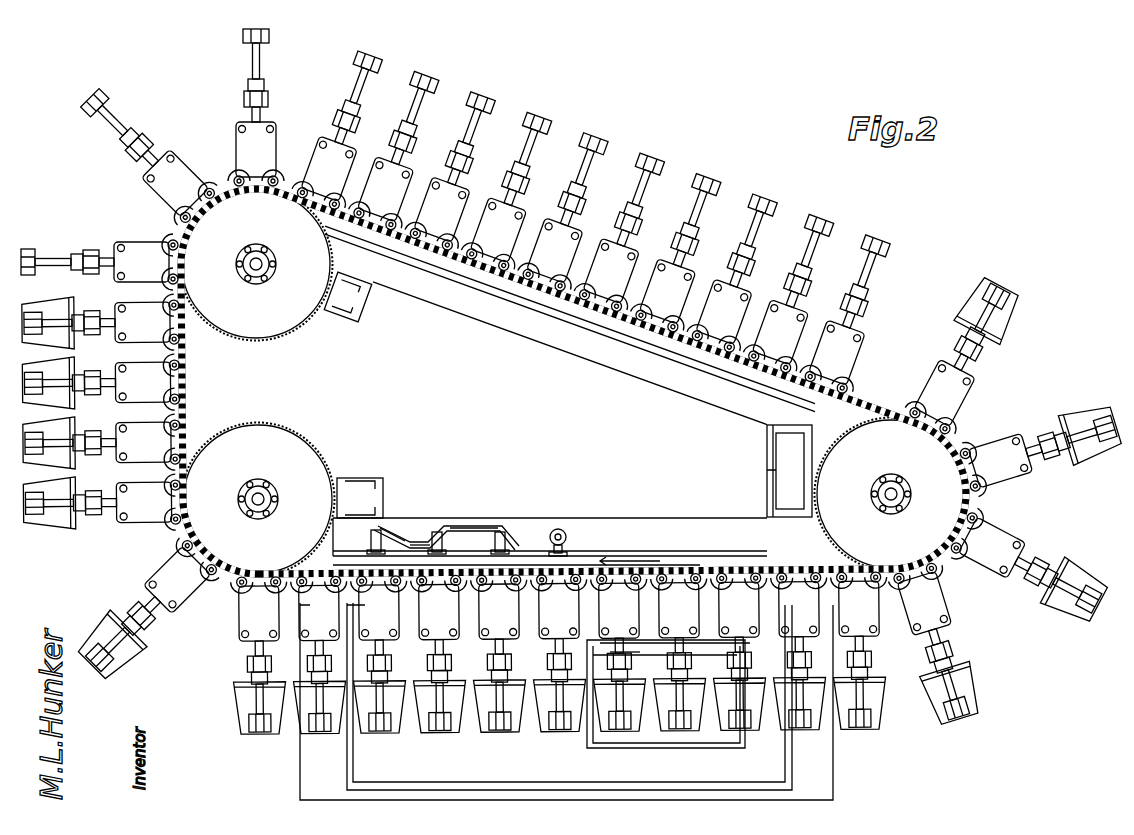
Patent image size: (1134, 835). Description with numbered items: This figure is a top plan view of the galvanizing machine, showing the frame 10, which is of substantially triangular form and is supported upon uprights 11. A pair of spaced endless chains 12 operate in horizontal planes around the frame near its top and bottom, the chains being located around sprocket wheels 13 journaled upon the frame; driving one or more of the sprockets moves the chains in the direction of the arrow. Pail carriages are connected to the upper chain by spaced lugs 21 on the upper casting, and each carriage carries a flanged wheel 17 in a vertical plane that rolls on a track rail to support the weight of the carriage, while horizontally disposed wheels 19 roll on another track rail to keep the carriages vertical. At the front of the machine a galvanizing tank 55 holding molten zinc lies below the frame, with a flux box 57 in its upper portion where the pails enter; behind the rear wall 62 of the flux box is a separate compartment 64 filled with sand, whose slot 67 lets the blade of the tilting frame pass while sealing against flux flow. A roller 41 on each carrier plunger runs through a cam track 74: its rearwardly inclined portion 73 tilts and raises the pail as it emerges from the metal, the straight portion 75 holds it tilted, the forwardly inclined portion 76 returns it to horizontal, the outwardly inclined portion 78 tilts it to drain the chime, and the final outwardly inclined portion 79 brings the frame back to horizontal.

The frame 10 is at (638, 518).
The uprights 11 is at (362, 318).
The endless chains 12 is at (622, 320).
The sprocket wheels 13 is at (272, 437).
The flanged wheel 17 is at (565, 563).
The horizontally disposed wheels 19 is at (508, 600).
The spaced lugs 21 is at (537, 283).
The roller 41 is at (508, 540).
The galvanizing tank 55 is at (358, 755).
The flux box 57 is at (640, 748).
The rear wall 62 is at (633, 652).
The separate compartment 64 is at (706, 652).
The slot 67 is at (646, 641).
The rearwardly inclined portion 73 is at (488, 527).
The cam track 74 is at (473, 525).
The straight portion 75 is at (455, 526).
The forwardly inclined portion 76 is at (430, 528).
The outwardly inclined portion 78 is at (410, 524).
The outwardly inclined portion 79 is at (392, 532).